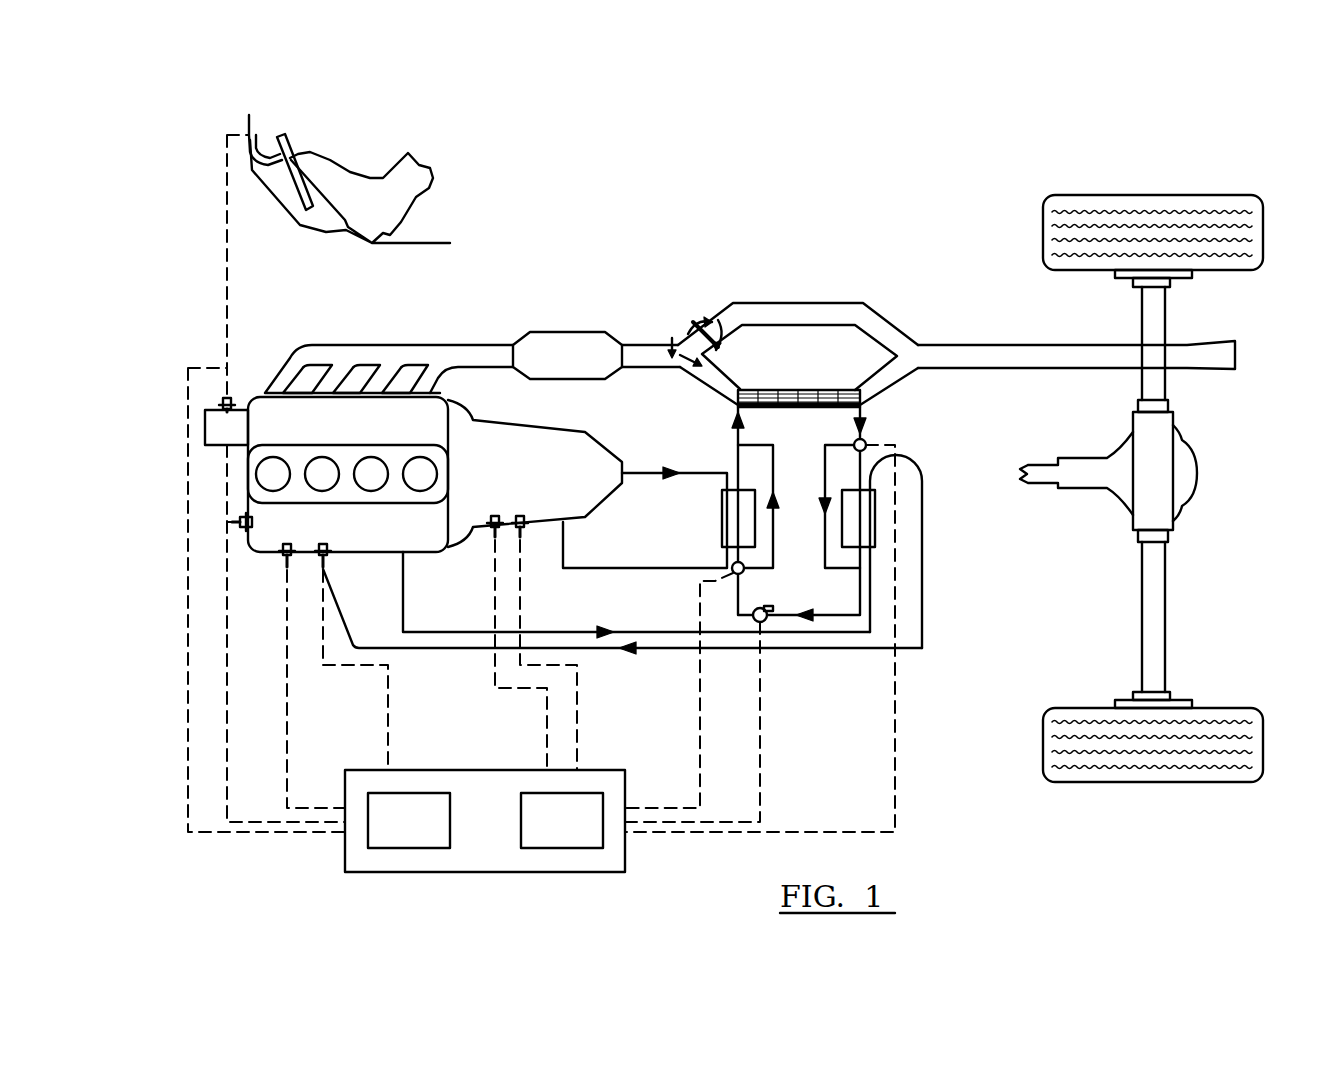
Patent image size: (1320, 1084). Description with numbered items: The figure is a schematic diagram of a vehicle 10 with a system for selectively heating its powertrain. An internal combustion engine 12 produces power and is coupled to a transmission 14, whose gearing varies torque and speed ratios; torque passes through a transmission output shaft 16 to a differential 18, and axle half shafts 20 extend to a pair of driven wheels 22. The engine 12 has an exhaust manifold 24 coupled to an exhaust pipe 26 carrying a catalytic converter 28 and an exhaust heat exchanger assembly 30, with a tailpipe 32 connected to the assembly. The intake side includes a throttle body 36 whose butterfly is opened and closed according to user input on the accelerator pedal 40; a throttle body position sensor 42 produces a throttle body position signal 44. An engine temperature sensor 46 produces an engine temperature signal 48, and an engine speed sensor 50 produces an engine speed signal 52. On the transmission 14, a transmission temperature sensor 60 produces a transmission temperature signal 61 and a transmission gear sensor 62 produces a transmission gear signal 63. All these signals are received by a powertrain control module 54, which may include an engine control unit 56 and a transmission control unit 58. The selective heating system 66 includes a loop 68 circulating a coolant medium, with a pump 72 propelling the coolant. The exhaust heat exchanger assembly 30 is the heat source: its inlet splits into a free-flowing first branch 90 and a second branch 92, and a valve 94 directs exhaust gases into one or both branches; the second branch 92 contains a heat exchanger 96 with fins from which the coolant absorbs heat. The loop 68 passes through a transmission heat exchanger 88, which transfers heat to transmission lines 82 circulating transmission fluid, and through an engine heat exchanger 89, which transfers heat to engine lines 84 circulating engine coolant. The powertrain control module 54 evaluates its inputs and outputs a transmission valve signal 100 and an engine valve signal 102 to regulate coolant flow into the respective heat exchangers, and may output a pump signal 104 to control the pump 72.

The vehicle 10 is at (905, 198).
The internal combustion engine 12 is at (333, 433).
The transmission 14 is at (556, 458).
The transmission output shaft 16 is at (1038, 490).
The differential 18 is at (1198, 478).
The axle half shafts 20 is at (1165, 317).
The driven wheels 22 is at (1192, 195).
The exhaust manifold 24 is at (385, 345).
The exhaust pipe 26 is at (492, 343).
The catalytic converter 28 is at (576, 332).
The exhaust heat exchanger assembly 30 is at (797, 303).
The tailpipe 32 is at (955, 345).
The throttle body 36 is at (205, 432).
The accelerator pedal 40 is at (258, 140).
The throttle body position sensor 42 is at (224, 400).
The throttle body position signal 44 is at (188, 608).
The engine temperature sensor 46 is at (325, 562).
The engine temperature signal 48 is at (350, 668).
The engine speed sensor 50 is at (285, 568).
The engine speed signal 52 is at (282, 724).
The powertrain control module 54 is at (490, 872).
The engine control unit 56 is at (409, 848).
The transmission control unit 58 is at (565, 848).
The transmission temperature sensor 60 is at (495, 516).
The transmission temperature signal 61 is at (495, 672).
The transmission gear sensor 62 is at (521, 516).
The transmission gear signal 63 is at (577, 712).
The selective heating system 66 is at (950, 421).
The loop 68 is at (868, 443).
The pump 72 is at (766, 607).
The transmission lines 82 is at (650, 473).
The engine lines 84 is at (922, 512).
The transmission heat exchanger 88 is at (722, 522).
The engine heat exchanger 89 is at (875, 527).
The first branch 90 is at (730, 318).
The second branch 92 is at (712, 378).
The valve 94 is at (672, 348).
The heat exchanger 96 is at (805, 390).
The transmission valve signal 100 is at (700, 722).
The engine valve signal 102 is at (895, 700).
The pump signal 104 is at (760, 712).